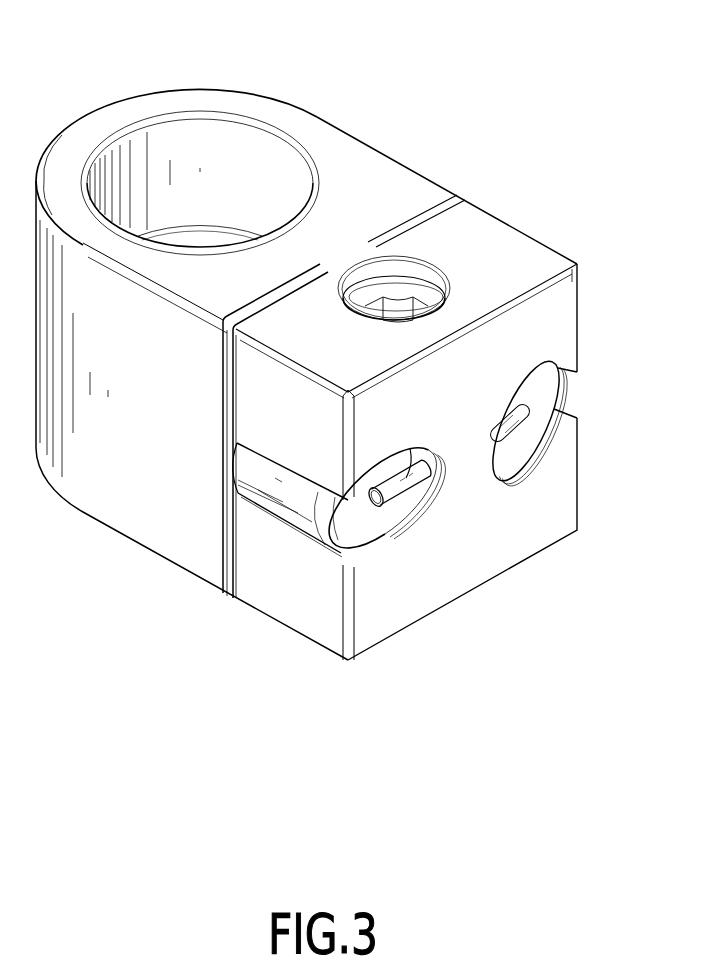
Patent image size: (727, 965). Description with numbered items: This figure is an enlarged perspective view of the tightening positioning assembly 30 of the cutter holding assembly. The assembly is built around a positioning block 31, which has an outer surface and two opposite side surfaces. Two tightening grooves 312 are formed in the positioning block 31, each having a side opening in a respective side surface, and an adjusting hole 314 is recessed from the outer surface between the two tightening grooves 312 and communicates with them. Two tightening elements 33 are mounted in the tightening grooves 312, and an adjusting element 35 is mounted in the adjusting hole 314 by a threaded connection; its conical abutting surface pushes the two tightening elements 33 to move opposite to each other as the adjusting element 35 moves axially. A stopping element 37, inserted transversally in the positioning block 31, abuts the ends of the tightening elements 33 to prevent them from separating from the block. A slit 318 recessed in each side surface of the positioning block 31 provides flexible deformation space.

The tightening positioning assembly 30 is at (500, 116).
The positioning block 31 is at (340, 133).
The tightening groove 312 is at (525, 465).
The adjusting hole 314 is at (435, 282).
The slit 318 is at (222, 548).
The tightening element 33 is at (542, 388).
The adjusting element 35 is at (392, 293).
The stopping element 37 is at (398, 488).